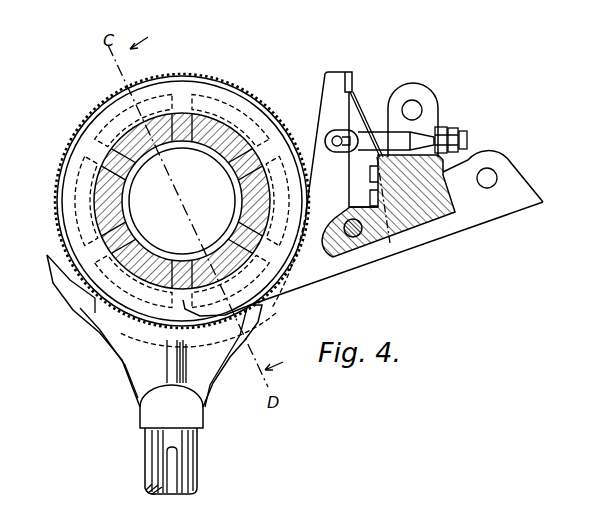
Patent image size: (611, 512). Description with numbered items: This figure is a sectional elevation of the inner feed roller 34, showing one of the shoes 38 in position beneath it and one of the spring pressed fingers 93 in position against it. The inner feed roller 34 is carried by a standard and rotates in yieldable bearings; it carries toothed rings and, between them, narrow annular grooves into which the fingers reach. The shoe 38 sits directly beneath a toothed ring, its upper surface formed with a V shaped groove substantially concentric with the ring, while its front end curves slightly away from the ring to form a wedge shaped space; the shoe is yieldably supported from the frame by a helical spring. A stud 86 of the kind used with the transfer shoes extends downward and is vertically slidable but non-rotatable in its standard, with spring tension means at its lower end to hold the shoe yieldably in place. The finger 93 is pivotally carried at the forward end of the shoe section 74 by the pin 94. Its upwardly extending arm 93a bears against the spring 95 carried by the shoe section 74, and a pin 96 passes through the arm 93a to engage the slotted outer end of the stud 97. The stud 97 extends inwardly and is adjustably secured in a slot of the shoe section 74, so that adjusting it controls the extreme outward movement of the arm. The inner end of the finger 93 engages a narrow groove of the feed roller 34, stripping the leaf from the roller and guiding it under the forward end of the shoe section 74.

The inner feed roller 34 is at (100, 203).
The shoe 38 is at (142, 338).
The stud 86 is at (185, 468).
The spring pressed finger 93 is at (297, 275).
The upwardly extending arm 93a is at (330, 90).
The pin 94 is at (360, 237).
The spring 95 is at (357, 100).
The pin 96 is at (327, 136).
The stud 97 is at (378, 137).
The shoe section 74 is at (422, 230).